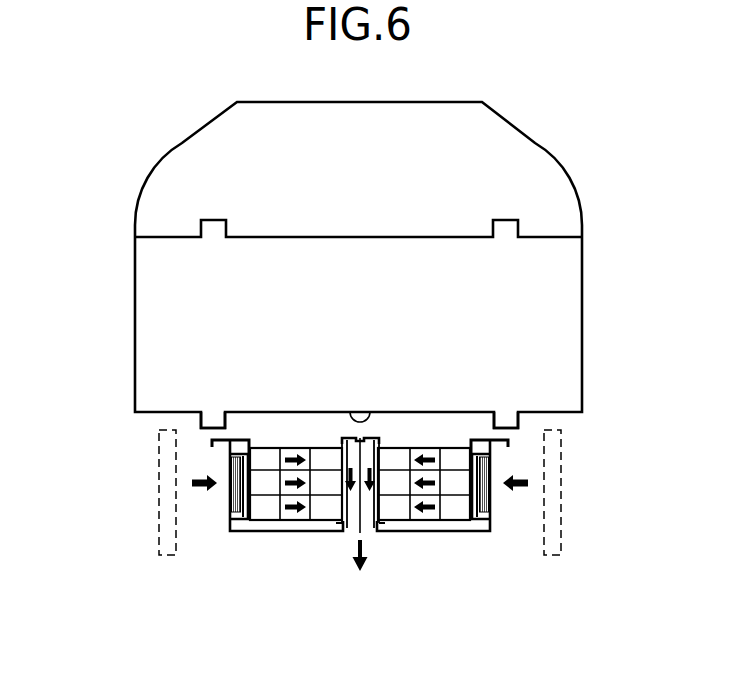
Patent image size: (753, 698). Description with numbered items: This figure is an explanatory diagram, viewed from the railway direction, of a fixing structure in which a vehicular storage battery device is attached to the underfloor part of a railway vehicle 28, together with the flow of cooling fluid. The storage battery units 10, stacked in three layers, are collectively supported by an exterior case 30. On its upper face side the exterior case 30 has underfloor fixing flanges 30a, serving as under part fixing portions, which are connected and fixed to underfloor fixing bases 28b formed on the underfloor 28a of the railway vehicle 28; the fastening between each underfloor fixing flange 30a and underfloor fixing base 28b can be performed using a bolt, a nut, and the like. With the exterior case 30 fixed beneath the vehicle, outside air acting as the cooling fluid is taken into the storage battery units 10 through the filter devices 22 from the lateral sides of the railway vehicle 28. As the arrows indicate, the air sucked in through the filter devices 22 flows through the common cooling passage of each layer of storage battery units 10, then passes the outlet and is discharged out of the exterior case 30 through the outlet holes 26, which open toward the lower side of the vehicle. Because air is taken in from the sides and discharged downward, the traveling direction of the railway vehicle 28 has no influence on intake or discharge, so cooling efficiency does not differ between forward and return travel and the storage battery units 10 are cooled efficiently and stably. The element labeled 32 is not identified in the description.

The storage battery unit 10 is at (260, 460).
The filter device 22 is at (229, 497).
The outlet hole 26 is at (349, 527).
The railway vehicle 28 is at (566, 269).
The underfloor 28a is at (352, 413).
The underfloor fixing base 28b is at (210, 420).
The exterior case 30 is at (230, 527).
The underfloor fixing flange 30a is at (212, 441).
The cooling air flow 32 is at (157, 483).